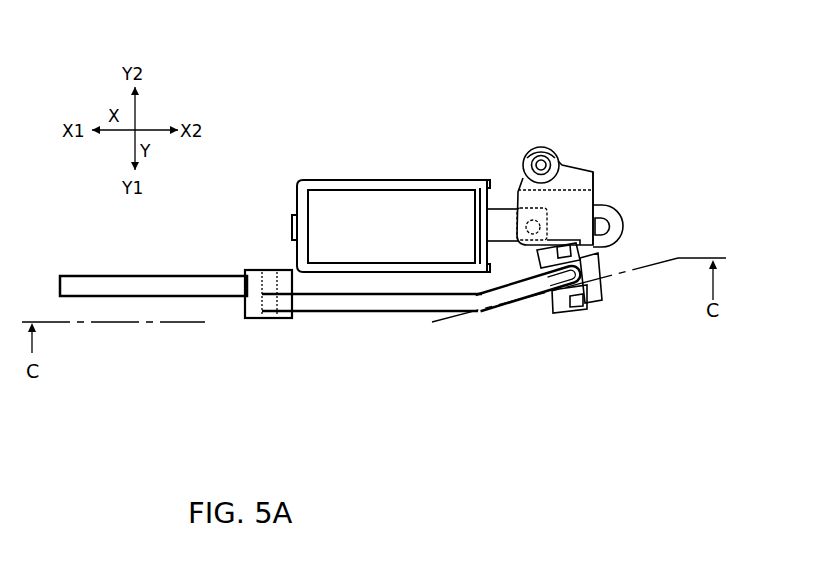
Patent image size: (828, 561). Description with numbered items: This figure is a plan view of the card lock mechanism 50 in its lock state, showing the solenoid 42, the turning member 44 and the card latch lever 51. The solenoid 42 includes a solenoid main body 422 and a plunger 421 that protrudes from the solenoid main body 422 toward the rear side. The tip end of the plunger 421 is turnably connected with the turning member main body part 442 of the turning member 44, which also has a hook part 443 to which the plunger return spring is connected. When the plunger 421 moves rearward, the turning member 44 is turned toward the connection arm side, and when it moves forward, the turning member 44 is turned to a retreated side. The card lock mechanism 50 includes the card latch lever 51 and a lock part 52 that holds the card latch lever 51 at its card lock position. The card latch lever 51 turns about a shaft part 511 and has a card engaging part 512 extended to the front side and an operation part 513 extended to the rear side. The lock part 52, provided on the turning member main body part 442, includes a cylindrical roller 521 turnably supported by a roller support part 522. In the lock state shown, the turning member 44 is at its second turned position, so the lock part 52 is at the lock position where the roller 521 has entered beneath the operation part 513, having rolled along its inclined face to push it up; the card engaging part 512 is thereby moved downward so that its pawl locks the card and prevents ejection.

The solenoid 42 is at (562, 88).
The plunger 421 is at (505, 209).
The solenoid main body 422 is at (393, 190).
The turning member 44 is at (577, 168).
The turning member main body part 442 is at (597, 198).
The hook part 443 is at (623, 226).
The card lock mechanism 50 is at (486, 329).
The card latch lever 51 is at (186, 298).
The shaft part 511 is at (255, 318).
The card engaging part 512 is at (120, 298).
The operation part 513 is at (527, 297).
The lock part 52 is at (672, 383).
The roller 521 is at (588, 312).
The roller support part 522 is at (601, 298).